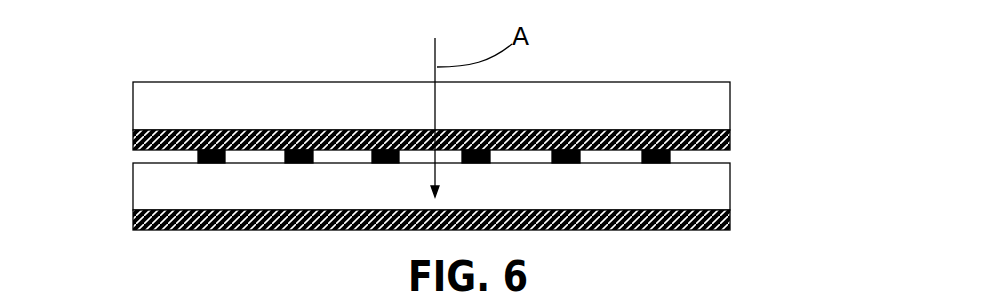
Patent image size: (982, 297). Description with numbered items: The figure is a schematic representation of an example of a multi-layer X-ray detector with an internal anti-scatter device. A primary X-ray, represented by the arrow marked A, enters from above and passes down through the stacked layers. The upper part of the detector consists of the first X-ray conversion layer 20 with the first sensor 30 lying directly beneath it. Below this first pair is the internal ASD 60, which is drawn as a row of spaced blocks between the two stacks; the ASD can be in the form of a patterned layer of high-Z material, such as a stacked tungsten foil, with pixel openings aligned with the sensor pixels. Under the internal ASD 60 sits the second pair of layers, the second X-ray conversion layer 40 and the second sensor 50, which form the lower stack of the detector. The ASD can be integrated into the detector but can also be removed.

The X-ray conversion layer 1 20 is at (717, 110).
The sensor 1 30 is at (730, 146).
The X-ray conversion layer 2 40 is at (718, 190).
The sensor 2 50 is at (730, 222).
The internal ASD 60 is at (198, 156).